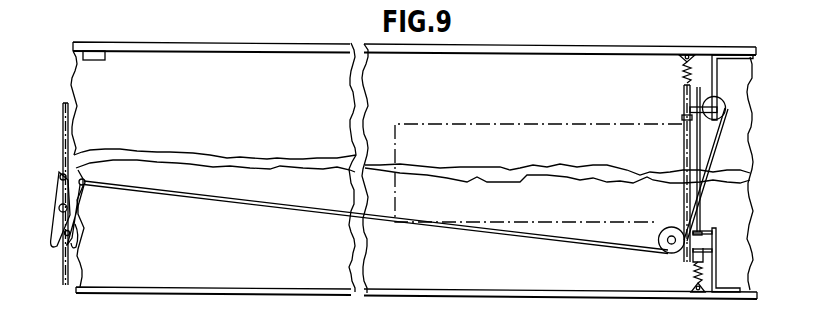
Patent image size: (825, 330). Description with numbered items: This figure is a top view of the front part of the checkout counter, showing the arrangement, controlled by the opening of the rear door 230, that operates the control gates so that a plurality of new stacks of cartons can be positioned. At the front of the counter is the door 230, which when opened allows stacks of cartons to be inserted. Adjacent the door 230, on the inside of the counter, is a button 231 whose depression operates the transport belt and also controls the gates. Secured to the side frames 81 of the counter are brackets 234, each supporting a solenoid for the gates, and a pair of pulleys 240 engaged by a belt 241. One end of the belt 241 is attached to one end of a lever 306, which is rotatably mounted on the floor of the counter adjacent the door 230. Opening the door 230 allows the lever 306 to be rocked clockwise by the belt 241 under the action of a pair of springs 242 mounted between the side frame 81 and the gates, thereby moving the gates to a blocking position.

The side frame 81 is at (193, 43).
The button 231 is at (97, 60).
The door 230 is at (63, 132).
The lever 306 is at (85, 187).
The belt 241 is at (290, 206).
The springs 242 is at (683, 73).
The brackets 234 is at (718, 82).
The pulleys 240 is at (729, 109).